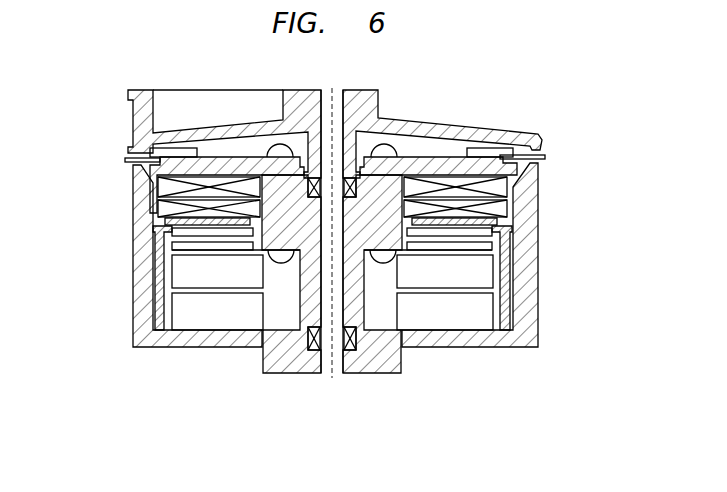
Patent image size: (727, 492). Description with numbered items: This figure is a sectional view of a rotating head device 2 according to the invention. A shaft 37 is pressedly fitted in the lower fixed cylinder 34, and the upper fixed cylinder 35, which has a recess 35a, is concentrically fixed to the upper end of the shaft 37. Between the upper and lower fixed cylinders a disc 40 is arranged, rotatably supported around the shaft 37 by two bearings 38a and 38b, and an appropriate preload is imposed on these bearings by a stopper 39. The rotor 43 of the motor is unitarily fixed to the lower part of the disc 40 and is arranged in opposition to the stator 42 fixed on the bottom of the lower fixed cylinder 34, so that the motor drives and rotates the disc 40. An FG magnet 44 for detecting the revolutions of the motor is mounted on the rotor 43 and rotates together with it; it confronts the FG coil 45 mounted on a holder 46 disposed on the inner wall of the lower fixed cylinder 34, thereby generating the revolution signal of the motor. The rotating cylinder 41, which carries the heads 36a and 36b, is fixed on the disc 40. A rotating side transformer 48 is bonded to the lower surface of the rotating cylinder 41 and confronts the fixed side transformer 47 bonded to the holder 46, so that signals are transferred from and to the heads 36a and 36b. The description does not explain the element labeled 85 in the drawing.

The rotating head device 2 is at (362, 255).
The lower fixed cylinder 34 is at (527, 317).
The upper fixed cylinder 35 is at (308, 121).
The recess 35a is at (492, 128).
The head 36a is at (125, 160).
The head 36b is at (545, 157).
The shaft 37 is at (330, 373).
The bearing 38a is at (316, 352).
The bearing 38b is at (360, 186).
The stopper 39 is at (304, 130).
The disc 40 is at (355, 307).
The rotating cylinder 41 is at (228, 160).
The stator 42 is at (178, 318).
The rotor 43 is at (180, 272).
The FG magnet 44 is at (176, 246).
The FG coil 45 is at (176, 231).
The holder 46 is at (505, 245).
The fixed side transformer 47 is at (480, 212).
The rotating side transformer 48 is at (495, 188).
The rotor frame 85 is at (133, 100).